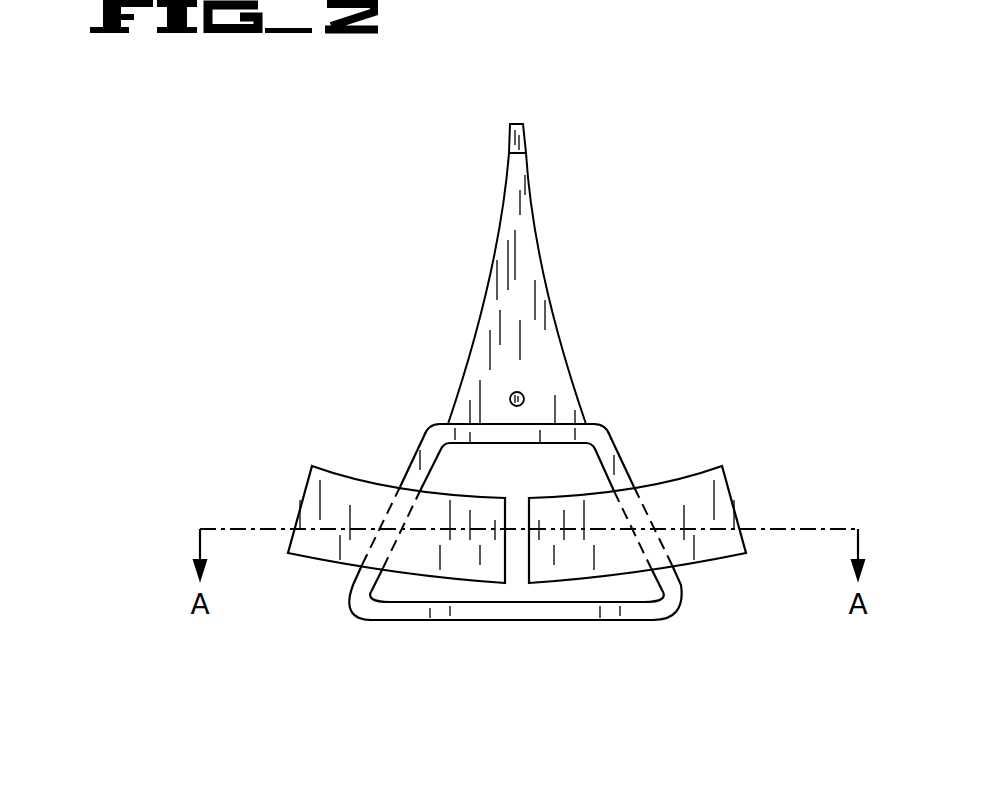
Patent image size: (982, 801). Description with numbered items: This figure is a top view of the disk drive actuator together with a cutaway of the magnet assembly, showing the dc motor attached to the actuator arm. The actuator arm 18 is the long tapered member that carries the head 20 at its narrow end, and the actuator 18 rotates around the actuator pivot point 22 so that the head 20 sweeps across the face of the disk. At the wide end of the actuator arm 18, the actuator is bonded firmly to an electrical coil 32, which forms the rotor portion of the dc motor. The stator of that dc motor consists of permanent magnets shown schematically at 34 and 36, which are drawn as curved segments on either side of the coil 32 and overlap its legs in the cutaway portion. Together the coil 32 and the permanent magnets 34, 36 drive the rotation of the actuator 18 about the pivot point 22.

The actuator arm 18 is at (543, 275).
The head 20 is at (519, 138).
The actuator pivot point 22 is at (523, 393).
The electrical coil 32 is at (620, 447).
The permanent magnet 34 is at (313, 557).
The permanent magnet 36 is at (718, 562).